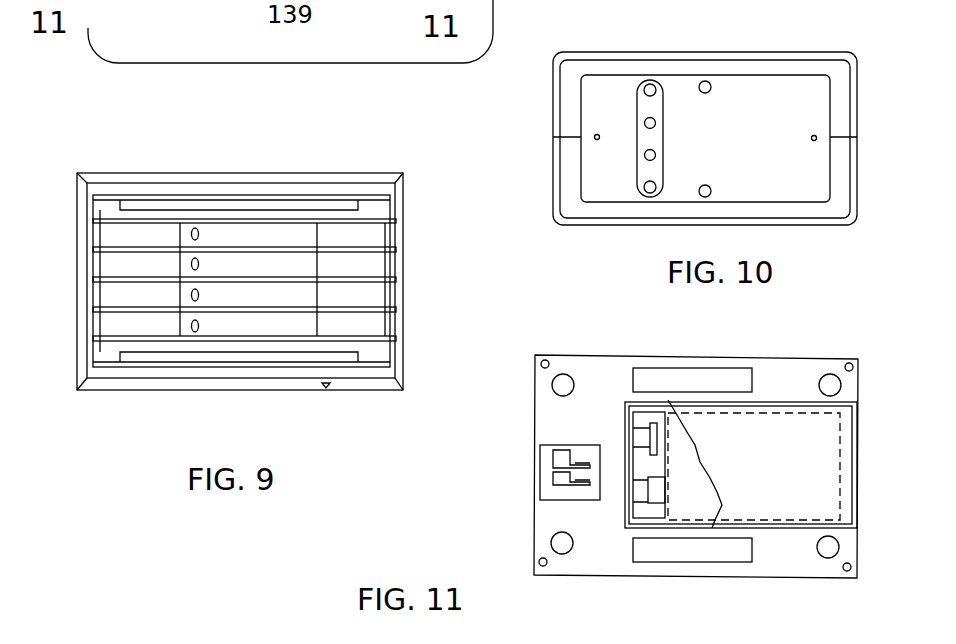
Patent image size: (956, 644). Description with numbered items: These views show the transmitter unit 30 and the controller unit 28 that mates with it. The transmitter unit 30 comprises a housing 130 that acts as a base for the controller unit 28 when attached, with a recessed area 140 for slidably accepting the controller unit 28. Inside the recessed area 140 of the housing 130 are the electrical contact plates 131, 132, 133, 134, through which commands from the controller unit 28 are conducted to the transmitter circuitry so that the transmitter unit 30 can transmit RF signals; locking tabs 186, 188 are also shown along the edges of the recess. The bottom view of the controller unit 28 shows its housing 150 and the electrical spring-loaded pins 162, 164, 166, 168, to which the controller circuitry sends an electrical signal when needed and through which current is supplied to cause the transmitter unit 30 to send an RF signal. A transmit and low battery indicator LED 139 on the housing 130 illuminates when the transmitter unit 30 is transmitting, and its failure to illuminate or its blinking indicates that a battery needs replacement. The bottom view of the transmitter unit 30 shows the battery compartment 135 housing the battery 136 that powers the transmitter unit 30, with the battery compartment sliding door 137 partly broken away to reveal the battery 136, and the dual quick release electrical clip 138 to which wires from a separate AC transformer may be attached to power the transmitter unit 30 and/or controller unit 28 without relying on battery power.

In FIG. 10, the controller unit 28 is at (866, 152).
In FIG. 9, the transmitter unit 30 is at (70, 265).
In FIG. 11, the transmitter unit 30 is at (600, 348).
In FIG. 9, the housing 130 is at (77, 350).
In FIG. 11, the housing 130 is at (765, 355).
In FIG. 9, the electrical contact plate 131 is at (258, 237).
In FIG. 9, the electrical contact plate 132 is at (277, 263).
In FIG. 9, the electrical contact plate 133 is at (230, 297).
In FIG. 9, the electrical contact plate 134 is at (280, 327).
In FIG. 11, the battery compartment 135 is at (645, 510).
In FIG. 11, the battery 136 is at (685, 500).
In FIG. 11, the battery compartment sliding door 137 is at (820, 482).
In FIG. 11, the dual quick release electrical clip 138 is at (551, 491).
In FIG. 9, the transmit and low battery indicator LED 139 is at (330, 388).
In FIG. 9, the recessed area 140 is at (204, 192).
In FIG. 10, the housing 150 is at (763, 55).
In FIG. 10, the electrical spring-loaded pin 162 is at (652, 84).
In FIG. 10, the electrical spring-loaded pin 164 is at (656, 122).
In FIG. 10, the electrical spring-loaded pin 166 is at (656, 155).
In FIG. 10, the electrical spring-loaded pin 168 is at (649, 193).
In FIG. 9, the lower mounting bracket 186 is at (130, 357).
In FIG. 9, the upper mounting bracket 188 is at (133, 198).